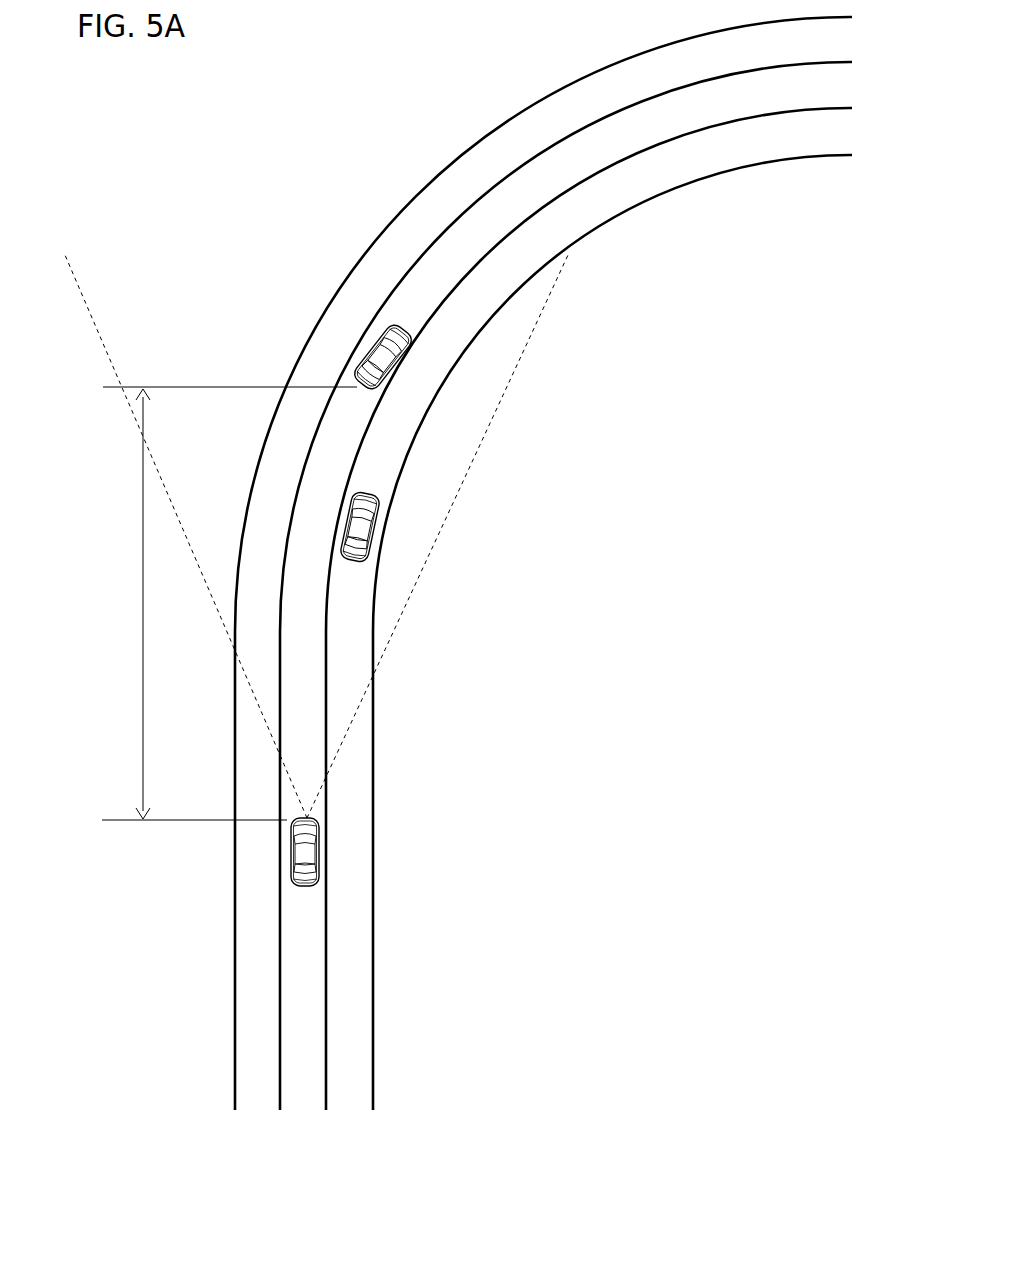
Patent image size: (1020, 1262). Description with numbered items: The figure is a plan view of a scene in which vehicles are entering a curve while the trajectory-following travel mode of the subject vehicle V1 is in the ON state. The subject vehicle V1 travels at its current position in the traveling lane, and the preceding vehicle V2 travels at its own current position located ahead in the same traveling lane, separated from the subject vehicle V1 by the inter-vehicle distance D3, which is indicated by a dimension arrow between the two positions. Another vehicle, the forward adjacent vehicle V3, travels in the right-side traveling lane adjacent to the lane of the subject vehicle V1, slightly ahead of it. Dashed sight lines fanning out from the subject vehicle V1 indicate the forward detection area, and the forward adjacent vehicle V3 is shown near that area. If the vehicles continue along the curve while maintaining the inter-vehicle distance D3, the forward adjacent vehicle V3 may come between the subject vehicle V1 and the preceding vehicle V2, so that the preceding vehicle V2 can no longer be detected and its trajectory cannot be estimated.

The subject vehicle V1 is at (305, 860).
The preceding vehicle V2 is at (360, 353).
The forward adjacent vehicle V3 is at (357, 530).
The inter-vehicle distance D3 is at (84, 604).